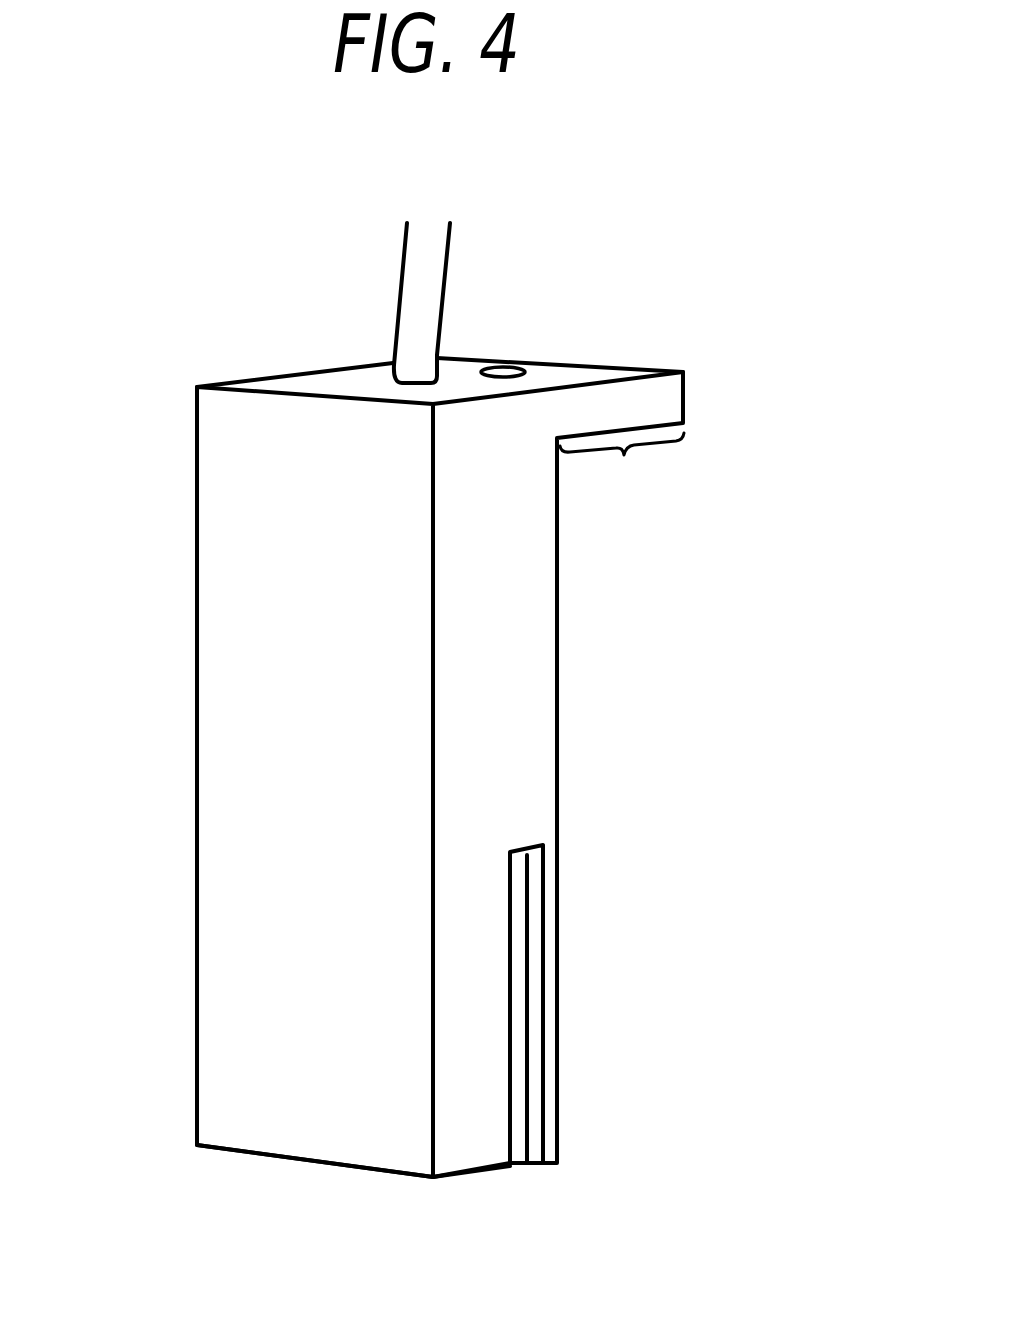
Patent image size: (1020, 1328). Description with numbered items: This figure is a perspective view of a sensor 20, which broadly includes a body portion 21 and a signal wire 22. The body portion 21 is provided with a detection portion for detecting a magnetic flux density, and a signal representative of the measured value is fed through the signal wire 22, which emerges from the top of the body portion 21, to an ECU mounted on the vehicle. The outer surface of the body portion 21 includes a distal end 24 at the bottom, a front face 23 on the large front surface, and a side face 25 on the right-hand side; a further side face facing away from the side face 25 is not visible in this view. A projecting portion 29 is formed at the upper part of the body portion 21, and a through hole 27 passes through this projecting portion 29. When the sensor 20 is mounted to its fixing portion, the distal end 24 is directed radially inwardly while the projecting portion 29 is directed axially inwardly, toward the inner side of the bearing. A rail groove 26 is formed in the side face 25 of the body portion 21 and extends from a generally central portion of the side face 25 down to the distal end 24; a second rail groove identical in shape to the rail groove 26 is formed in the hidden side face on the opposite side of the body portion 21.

The sensor 20 is at (421, 751).
The body portion 21 is at (312, 385).
The signal wire 22 is at (403, 302).
The front face 23 is at (228, 575).
The distal end 24 is at (470, 1177).
The side face 25 is at (520, 648).
The rail groove 26 is at (537, 970).
The through hole 27 is at (507, 368).
The projecting portion 29 is at (622, 471).